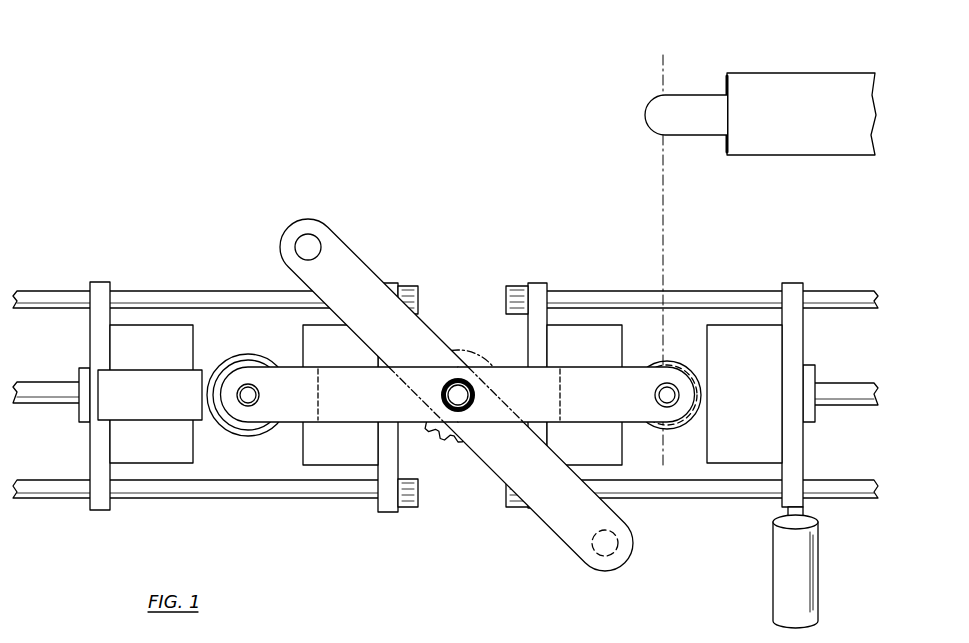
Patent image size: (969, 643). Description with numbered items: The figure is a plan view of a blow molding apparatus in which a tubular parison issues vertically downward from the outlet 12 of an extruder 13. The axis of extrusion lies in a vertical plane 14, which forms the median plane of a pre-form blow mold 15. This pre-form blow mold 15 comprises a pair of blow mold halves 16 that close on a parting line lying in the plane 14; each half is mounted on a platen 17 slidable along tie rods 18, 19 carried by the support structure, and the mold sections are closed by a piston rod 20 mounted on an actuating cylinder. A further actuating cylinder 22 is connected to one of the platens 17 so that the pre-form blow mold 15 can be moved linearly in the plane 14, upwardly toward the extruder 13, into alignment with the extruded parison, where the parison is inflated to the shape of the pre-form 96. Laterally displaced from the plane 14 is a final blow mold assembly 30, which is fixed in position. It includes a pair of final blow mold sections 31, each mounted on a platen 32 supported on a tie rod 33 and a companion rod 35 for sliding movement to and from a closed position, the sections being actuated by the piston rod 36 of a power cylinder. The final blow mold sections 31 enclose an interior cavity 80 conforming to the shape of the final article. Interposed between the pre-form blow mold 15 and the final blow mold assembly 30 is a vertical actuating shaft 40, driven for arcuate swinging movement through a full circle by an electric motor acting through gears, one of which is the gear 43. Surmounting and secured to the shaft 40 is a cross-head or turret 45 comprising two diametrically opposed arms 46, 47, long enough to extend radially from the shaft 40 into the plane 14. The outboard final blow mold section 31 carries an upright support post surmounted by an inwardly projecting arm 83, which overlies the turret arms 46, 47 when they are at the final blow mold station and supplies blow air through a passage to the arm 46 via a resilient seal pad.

The outlet 12 is at (691, 103).
The extruder 13 is at (800, 78).
The vertical plane 14 is at (663, 164).
The pre-form blow mold 15 is at (730, 281).
The blow mold halves 16 is at (593, 356).
The platen 17 is at (528, 338).
The tie rod 18 is at (612, 290).
The tie rod 19 is at (693, 492).
The piston rod 20 is at (852, 402).
The actuating cylinder 22 is at (820, 580).
The final blow mold assembly 30 is at (148, 281).
The final blow mold sections 31 is at (161, 356).
The platen 32 is at (90, 338).
The tie rod 33 is at (240, 290).
The lower rail 35 is at (270, 495).
The piston rod 36 is at (48, 402).
The vertical actuating shaft 40 is at (466, 392).
The gear 43 is at (478, 440).
The cross-head or turret 45 is at (477, 247).
The arm 46 is at (618, 404).
The arm 47 is at (304, 404).
The interior cavity 80 is at (258, 430).
The arm 83 is at (163, 403).
The pre-form 96 is at (680, 425).